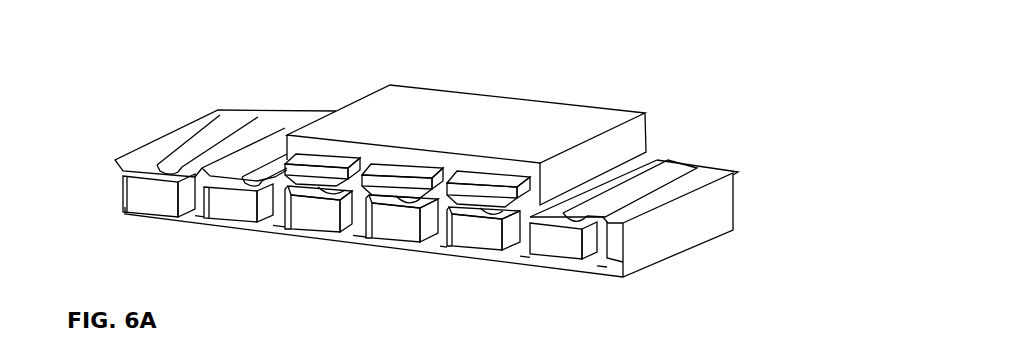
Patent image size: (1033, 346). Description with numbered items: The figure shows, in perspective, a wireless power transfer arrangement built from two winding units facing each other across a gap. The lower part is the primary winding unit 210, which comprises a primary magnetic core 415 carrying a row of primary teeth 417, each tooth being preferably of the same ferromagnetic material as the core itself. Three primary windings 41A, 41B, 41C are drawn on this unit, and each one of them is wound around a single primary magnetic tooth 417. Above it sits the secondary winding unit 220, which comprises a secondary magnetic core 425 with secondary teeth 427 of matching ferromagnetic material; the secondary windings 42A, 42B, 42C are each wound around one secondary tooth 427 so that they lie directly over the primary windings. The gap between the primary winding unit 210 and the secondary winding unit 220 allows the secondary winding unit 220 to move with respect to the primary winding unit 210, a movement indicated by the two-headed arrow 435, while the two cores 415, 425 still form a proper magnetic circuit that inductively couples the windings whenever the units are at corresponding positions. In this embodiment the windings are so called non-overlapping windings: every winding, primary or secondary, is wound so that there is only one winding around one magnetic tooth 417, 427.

The primary winding unit 210 is at (110, 233).
The secondary winding unit 220 is at (380, 65).
The primary magnetic core 415 is at (655, 250).
The primary tooth 417 is at (190, 132).
The secondary magnetic core 425 is at (572, 115).
The secondary tooth 427 is at (650, 158).
The two-headed arrow 435 is at (553, 80).
The primary winding 41A is at (318, 222).
The primary winding 41B is at (400, 232).
The primary winding 41C is at (482, 240).
The secondary winding 42A is at (317, 160).
The secondary winding 42B is at (402, 172).
The secondary winding 42C is at (487, 183).